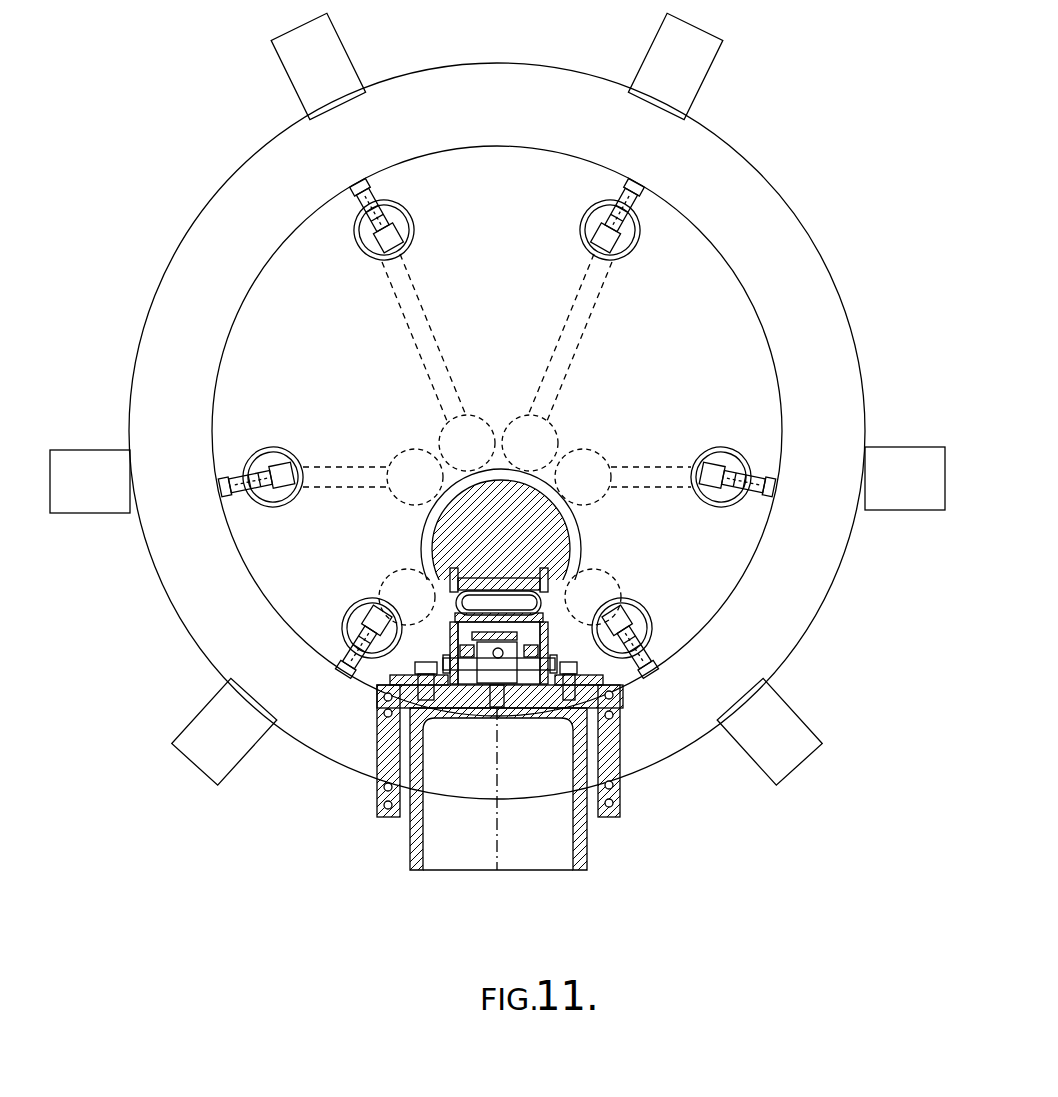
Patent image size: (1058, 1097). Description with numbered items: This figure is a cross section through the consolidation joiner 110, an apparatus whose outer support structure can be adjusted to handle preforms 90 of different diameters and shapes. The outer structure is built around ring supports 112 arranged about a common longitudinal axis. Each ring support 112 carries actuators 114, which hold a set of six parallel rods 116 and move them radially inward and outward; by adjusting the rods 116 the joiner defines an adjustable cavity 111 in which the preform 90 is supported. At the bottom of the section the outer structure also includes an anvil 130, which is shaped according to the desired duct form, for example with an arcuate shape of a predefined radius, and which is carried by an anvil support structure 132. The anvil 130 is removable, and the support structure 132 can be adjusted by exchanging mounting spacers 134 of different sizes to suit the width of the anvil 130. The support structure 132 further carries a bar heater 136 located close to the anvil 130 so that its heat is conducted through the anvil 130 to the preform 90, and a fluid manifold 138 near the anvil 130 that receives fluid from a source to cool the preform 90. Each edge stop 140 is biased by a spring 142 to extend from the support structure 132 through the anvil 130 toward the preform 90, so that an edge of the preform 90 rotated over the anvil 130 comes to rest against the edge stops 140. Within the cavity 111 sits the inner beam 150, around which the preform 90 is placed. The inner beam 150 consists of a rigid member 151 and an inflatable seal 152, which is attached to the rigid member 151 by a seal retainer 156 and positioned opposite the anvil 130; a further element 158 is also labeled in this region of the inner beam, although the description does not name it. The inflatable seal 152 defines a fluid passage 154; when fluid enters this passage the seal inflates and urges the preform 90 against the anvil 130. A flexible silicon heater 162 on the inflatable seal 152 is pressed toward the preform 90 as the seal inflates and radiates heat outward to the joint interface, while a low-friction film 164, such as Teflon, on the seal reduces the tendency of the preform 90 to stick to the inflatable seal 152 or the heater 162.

The consolidation joiner 110 is at (178, 182).
The cavity 111 is at (717, 323).
The ring support 112 is at (178, 312).
The actuator 114 is at (295, 103).
The rod 116 is at (408, 232).
The preform 90 is at (499, 469).
The inner beam 150 is at (523, 505).
The rigid member 151 is at (468, 520).
The inflatable seal 152 is at (545, 600).
The fluid passage 154 is at (560, 610).
The seal retainer 156 is at (560, 545).
The holder portion 158 is at (440, 528).
The flexible silicon heater 162 is at (540, 530).
The low-friction film 164 is at (565, 590).
The edge stop 140 is at (447, 600).
The spring 142 is at (440, 615).
The anvil 130 is at (620, 683).
The anvil support structure 132 is at (625, 693).
The mounting spacer 134 is at (468, 702).
The heater 136 is at (378, 690).
The fluid manifold 138 is at (505, 702).